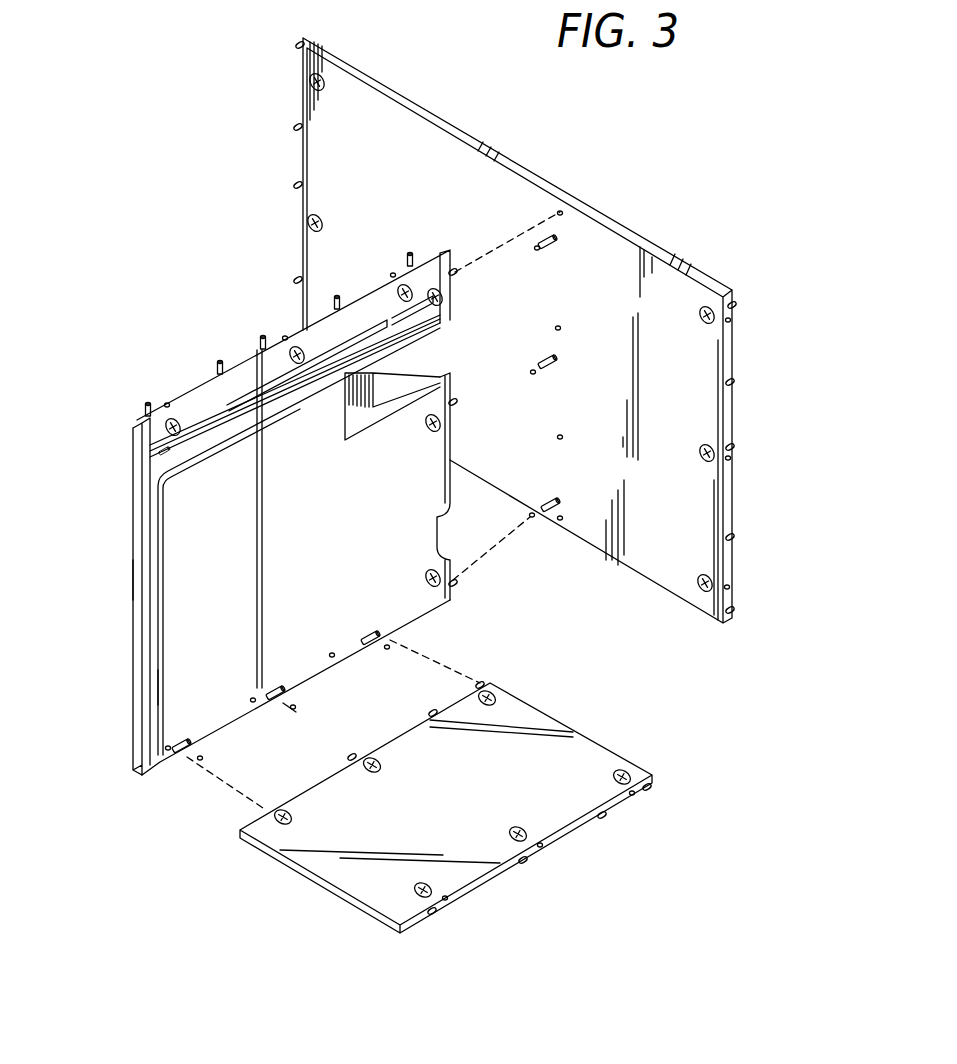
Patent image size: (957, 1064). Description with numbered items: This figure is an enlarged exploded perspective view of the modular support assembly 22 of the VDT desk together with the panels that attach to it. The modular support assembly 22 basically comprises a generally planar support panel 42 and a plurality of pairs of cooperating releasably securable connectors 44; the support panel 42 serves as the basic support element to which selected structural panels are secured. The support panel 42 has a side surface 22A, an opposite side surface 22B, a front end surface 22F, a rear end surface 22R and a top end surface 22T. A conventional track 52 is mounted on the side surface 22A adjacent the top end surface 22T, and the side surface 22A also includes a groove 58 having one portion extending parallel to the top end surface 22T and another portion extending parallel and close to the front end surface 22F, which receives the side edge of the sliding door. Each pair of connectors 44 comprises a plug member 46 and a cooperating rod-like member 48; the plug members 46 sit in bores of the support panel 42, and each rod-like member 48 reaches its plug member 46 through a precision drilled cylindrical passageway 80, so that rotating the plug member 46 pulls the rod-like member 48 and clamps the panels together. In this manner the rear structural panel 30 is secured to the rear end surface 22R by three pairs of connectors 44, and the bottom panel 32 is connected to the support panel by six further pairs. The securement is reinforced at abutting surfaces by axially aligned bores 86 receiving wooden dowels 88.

The modular support assembly 22 is at (320, 539).
The side surface of the support panel 22A is at (163, 688).
The side surface of the support panel 22B is at (134, 505).
The front end surface 22F is at (133, 582).
The rear end surface 22R is at (455, 438).
The top end surface 22T is at (298, 325).
The rear structural panel 30 is at (482, 343).
The bottom panel 32 is at (557, 722).
The support panel 42 is at (191, 618).
The releasably securable connectors 44 is at (203, 758).
The plug member 46 is at (320, 215).
The rod-like member 48 is at (556, 242).
The track 52 is at (307, 364).
The groove 58 is at (162, 556).
The cylindrical passageway 80 is at (166, 403).
The bores 86 is at (562, 212).
The dowels 88 is at (297, 126).